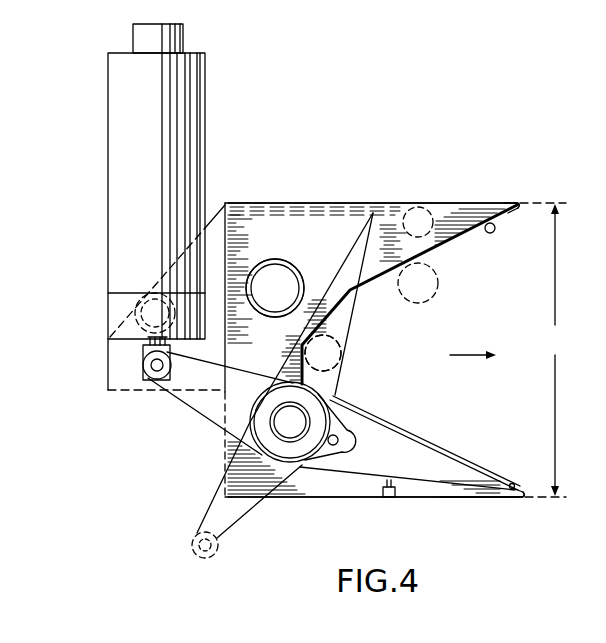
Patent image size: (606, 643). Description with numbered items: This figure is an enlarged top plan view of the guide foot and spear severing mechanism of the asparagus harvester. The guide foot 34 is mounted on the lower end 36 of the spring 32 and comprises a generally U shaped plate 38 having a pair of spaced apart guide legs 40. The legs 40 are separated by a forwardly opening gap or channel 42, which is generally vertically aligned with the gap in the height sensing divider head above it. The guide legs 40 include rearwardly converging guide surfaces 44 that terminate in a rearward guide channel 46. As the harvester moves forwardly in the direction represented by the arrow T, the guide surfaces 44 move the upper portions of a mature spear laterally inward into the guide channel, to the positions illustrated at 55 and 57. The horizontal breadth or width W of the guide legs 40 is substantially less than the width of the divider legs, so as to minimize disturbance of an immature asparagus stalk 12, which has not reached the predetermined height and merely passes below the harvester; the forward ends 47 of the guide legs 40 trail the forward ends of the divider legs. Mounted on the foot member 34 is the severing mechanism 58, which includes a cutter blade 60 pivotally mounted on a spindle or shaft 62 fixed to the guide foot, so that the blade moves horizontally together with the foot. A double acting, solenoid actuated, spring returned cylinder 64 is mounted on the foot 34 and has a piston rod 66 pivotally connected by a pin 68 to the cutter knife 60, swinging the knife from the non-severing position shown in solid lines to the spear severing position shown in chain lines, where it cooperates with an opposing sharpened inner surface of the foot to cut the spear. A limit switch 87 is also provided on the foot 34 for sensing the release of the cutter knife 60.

The immature asparagus stalk 12 is at (426, 208).
The spring 32 is at (262, 262).
The guide foot 34 is at (483, 506).
The lower end of the spring 36 is at (284, 260).
The U shaped plate 38 is at (265, 197).
The guide legs 40 is at (396, 202).
The forwardly opening gap or channel 42 is at (466, 325).
The guide surfaces 44 is at (489, 223).
The rearward guide channel 46 is at (334, 341).
The forward ends of guide legs 47 is at (518, 204).
The spear position in guide channel 55 is at (432, 290).
The spear position 57 is at (340, 366).
The severing mechanism 58 is at (122, 459).
The cutter blade 60 is at (323, 287).
The spindle or shaft 62 is at (288, 422).
The cylinder 64 is at (108, 110).
The piston rod 66 is at (143, 343).
The pin 68 is at (150, 370).
The limit switch 87 is at (384, 486).
The width of the guide legs W is at (543, 350).
The forward direction of travel T is at (472, 371).